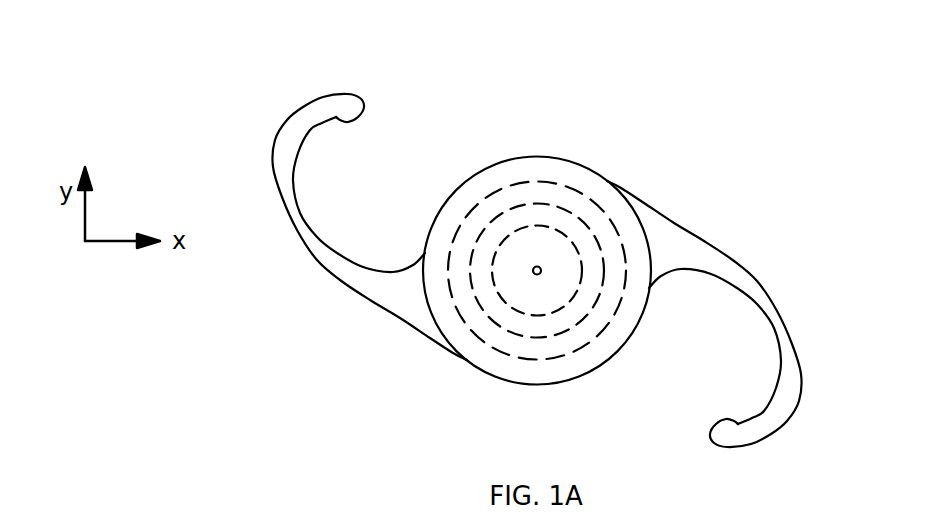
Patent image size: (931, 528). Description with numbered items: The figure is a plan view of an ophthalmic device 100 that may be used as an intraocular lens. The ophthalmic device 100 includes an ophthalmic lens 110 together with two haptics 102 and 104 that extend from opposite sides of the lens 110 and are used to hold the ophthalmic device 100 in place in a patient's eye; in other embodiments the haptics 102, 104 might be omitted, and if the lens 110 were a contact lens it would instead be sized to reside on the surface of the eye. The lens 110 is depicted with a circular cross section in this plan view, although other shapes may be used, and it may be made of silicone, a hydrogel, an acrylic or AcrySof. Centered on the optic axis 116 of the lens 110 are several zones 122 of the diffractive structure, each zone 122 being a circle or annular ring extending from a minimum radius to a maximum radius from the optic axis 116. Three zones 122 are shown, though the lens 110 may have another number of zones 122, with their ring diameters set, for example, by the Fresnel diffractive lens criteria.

The ophthalmic device 100 is at (512, 58).
The haptic 102 is at (283, 232).
The haptic 104 is at (760, 268).
The ophthalmic lens 110 is at (539, 157).
The optic axis 116 is at (533, 270).
The zones 122 is at (570, 298).